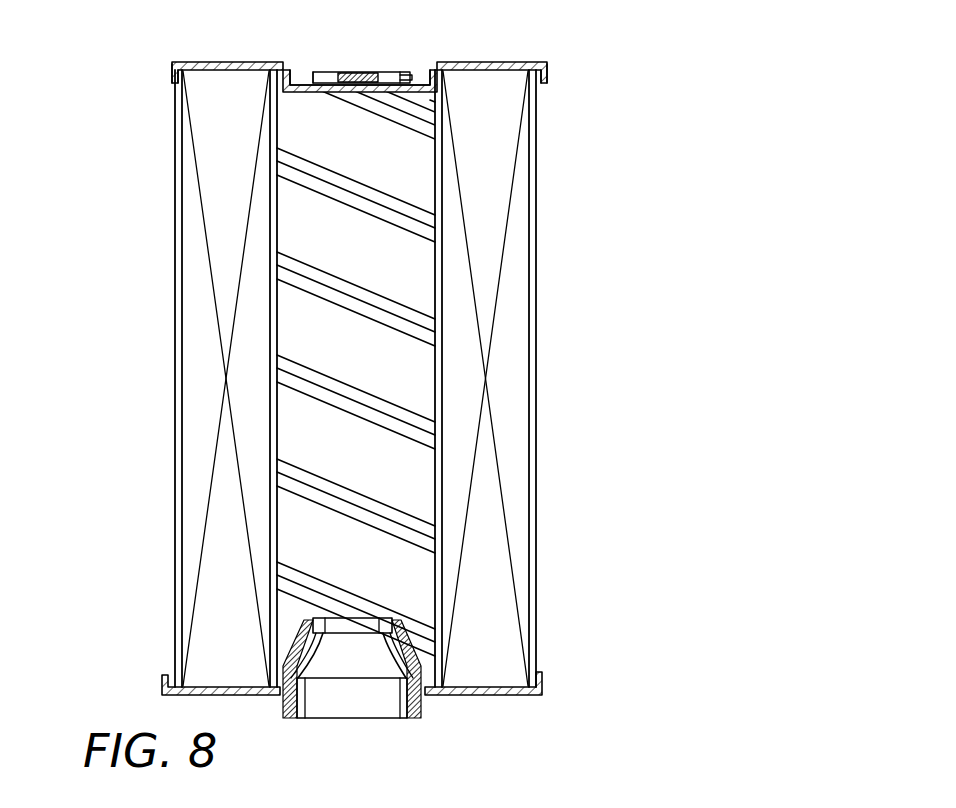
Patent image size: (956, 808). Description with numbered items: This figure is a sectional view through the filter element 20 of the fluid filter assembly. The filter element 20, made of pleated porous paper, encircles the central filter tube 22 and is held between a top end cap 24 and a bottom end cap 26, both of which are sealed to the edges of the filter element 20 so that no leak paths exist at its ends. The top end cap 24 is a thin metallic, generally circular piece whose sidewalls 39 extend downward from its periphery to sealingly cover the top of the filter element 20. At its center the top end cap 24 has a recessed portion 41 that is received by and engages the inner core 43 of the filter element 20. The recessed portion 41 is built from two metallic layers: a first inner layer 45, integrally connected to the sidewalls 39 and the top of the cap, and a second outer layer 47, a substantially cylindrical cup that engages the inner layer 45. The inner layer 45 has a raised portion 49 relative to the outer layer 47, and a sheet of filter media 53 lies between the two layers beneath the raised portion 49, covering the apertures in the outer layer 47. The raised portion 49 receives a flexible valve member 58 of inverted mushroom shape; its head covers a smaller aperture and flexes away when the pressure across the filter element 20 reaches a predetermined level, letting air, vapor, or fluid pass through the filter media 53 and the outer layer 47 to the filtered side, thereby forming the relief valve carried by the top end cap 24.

The filter element 20 is at (538, 370).
The central filter tube 22 is at (418, 705).
The top end cap 24 is at (548, 62).
The bottom end cap 26 is at (540, 690).
The sidewalls 39 is at (172, 80).
The recessed portion 41 is at (412, 60).
The inner core 43 is at (292, 198).
The first inner layer 45 is at (300, 70).
The second outer layer 47 is at (417, 93).
The raised portion 49 is at (409, 70).
The sheet of filter media 53 is at (305, 99).
The flexible valve member 58 is at (370, 68).